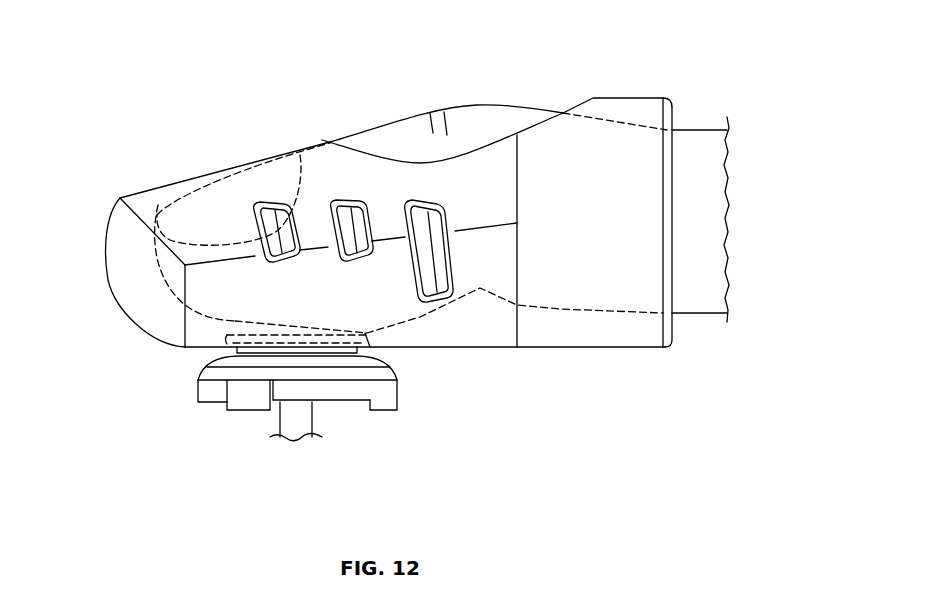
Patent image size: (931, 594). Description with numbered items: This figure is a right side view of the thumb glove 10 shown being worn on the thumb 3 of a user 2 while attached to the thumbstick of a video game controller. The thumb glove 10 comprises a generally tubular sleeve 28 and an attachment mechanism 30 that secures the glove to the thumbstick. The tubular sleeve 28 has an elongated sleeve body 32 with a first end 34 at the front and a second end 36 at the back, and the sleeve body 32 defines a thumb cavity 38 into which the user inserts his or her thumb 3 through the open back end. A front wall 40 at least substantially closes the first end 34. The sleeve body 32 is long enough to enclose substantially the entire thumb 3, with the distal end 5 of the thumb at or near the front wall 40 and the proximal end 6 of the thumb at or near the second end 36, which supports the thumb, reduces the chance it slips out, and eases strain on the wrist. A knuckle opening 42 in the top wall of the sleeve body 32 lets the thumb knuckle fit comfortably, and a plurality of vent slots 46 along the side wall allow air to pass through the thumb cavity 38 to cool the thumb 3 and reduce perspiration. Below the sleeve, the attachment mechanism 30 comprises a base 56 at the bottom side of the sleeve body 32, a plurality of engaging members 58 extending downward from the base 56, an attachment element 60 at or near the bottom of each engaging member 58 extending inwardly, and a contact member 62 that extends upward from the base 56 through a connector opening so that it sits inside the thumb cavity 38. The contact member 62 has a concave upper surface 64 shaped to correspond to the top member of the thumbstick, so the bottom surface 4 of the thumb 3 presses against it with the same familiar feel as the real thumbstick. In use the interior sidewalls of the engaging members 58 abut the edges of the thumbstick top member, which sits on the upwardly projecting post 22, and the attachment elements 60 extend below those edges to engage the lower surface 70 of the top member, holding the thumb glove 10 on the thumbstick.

The thumb glove 10 is at (219, 85).
The thumb 3 is at (360, 116).
The knuckle opening 42 is at (414, 146).
The tubular sleeve 28 is at (631, 141).
The second end 36 is at (672, 75).
The thumb cavity 38 is at (690, 228).
The user 2 is at (709, 328).
The sleeve body 32 is at (470, 330).
The first end 34 is at (103, 188).
The front wall 40 is at (117, 262).
The distal end 5 is at (145, 219).
The upper surface 64 is at (264, 320).
The proximal end 6 is at (643, 327).
The vent slots 46 is at (269, 206).
The bottom surface 4 is at (225, 329).
The contact member 62 is at (370, 340).
The base 56 is at (343, 362).
The attachment mechanism 30 is at (151, 395).
The lower surface 70 is at (196, 412).
The engaging members 58 is at (243, 403).
The attachment element 60 is at (372, 408).
The post 22 is at (297, 424).